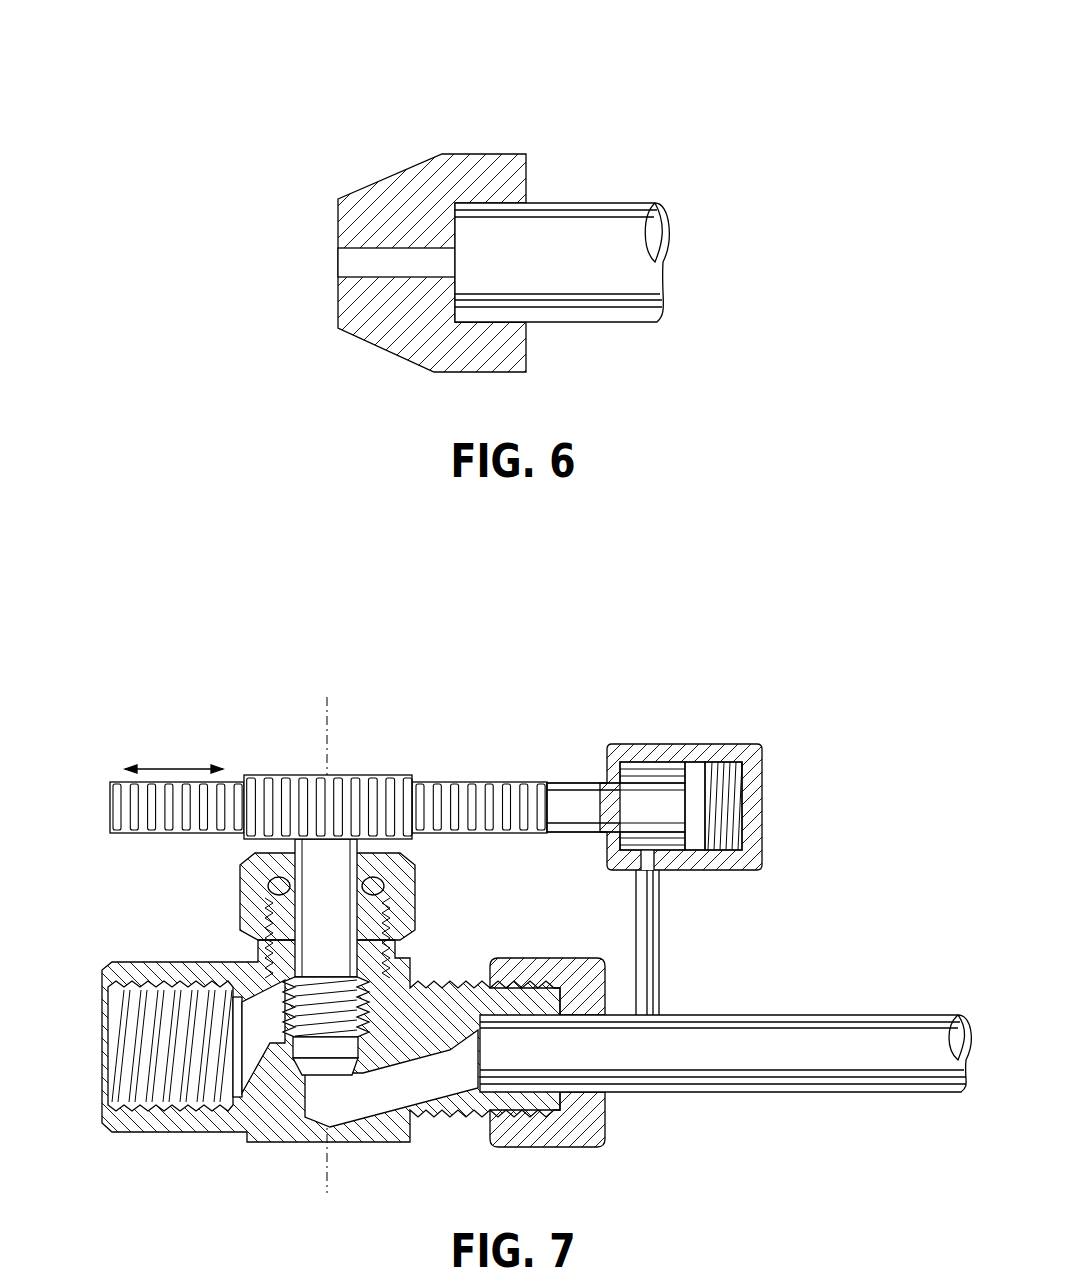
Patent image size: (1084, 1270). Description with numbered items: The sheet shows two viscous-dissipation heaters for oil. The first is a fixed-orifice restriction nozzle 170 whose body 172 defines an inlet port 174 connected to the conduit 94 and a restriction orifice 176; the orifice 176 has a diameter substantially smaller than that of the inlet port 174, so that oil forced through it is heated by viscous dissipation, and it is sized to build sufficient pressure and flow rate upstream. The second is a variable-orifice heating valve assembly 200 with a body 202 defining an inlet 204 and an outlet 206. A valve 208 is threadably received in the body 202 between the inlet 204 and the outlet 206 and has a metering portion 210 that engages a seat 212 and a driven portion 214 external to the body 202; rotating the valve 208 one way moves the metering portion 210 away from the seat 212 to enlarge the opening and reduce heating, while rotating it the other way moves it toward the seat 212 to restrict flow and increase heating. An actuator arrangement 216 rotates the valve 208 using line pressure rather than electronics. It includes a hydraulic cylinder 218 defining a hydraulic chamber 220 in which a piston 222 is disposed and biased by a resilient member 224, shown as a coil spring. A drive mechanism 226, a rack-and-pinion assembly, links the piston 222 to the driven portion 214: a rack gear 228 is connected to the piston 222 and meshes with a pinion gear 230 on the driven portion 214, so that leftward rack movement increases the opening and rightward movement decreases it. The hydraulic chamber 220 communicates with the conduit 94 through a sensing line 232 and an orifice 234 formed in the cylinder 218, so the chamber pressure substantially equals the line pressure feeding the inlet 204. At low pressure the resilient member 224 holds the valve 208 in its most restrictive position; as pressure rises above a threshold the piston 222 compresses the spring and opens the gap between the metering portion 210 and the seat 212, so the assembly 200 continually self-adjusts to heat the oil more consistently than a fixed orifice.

In FIG. 6, the restriction nozzle 170 is at (505, 208).
In FIG. 6, the body 172 is at (433, 238).
In FIG. 6, the inlet port 174 is at (495, 323).
In FIG. 6, the restriction orifice 176 is at (365, 258).
In FIG. 6, the conduit 94 is at (580, 203).
In FIG. 7, the conduit 94 is at (767, 1093).
In FIG. 7, the heating valve assembly 200 is at (513, 907).
In FIG. 7, the body 202 is at (307, 1069).
In FIG. 7, the inlet 204 is at (515, 1100).
In FIG. 7, the outlet 206 is at (122, 1130).
In FIG. 7, the valve 208 is at (330, 1017).
In FIG. 7, the metering portion 210 is at (315, 1068).
In FIG. 7, the seat 212 is at (360, 1078).
In FIG. 7, the driven portion 214 is at (358, 841).
In FIG. 7, the actuator arrangement 216 is at (655, 785).
In FIG. 7, the hydraulic cylinder 218 is at (681, 785).
In FIG. 7, the hydraulic chamber 220 is at (645, 762).
In FIG. 7, the piston 222 is at (695, 785).
In FIG. 7, the resilient member 224 is at (735, 805).
In FIG. 7, the drive mechanism 226 is at (397, 730).
In FIG. 7, the rack gear 228 is at (470, 782).
In FIG. 7, the pinion gear 230 is at (300, 777).
In FIG. 7, the sensing line 232 is at (662, 985).
In FIG. 7, the orifice 234 is at (652, 858).